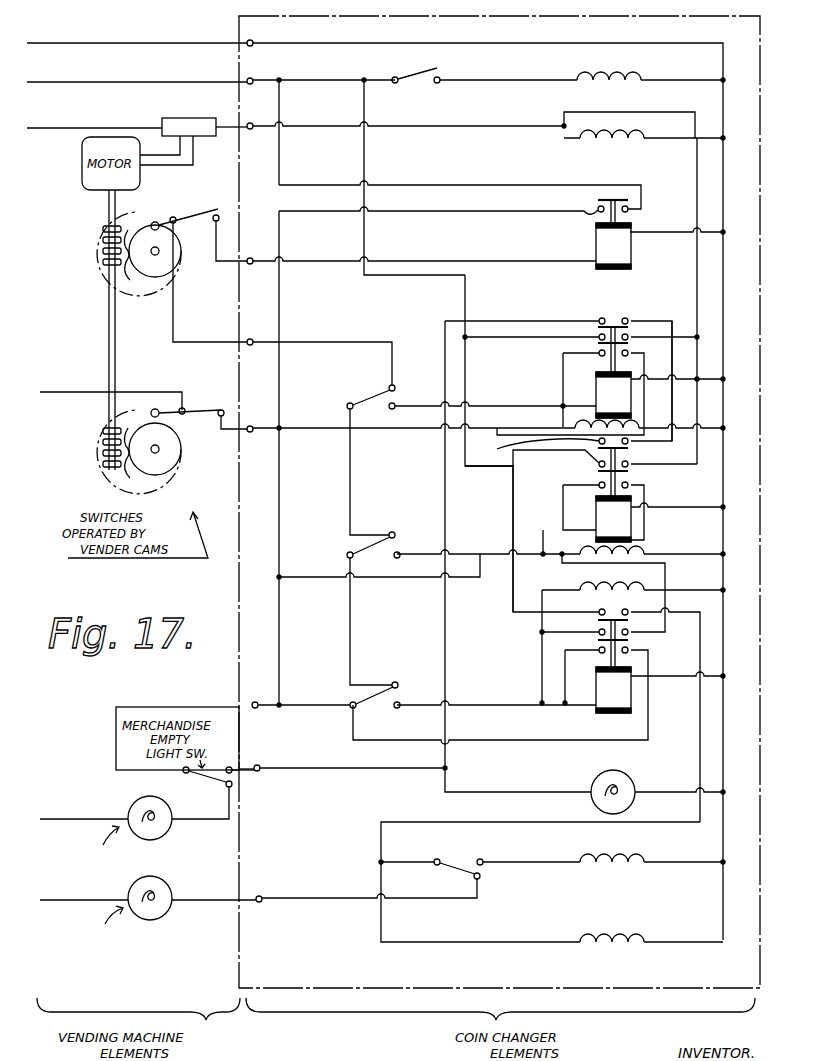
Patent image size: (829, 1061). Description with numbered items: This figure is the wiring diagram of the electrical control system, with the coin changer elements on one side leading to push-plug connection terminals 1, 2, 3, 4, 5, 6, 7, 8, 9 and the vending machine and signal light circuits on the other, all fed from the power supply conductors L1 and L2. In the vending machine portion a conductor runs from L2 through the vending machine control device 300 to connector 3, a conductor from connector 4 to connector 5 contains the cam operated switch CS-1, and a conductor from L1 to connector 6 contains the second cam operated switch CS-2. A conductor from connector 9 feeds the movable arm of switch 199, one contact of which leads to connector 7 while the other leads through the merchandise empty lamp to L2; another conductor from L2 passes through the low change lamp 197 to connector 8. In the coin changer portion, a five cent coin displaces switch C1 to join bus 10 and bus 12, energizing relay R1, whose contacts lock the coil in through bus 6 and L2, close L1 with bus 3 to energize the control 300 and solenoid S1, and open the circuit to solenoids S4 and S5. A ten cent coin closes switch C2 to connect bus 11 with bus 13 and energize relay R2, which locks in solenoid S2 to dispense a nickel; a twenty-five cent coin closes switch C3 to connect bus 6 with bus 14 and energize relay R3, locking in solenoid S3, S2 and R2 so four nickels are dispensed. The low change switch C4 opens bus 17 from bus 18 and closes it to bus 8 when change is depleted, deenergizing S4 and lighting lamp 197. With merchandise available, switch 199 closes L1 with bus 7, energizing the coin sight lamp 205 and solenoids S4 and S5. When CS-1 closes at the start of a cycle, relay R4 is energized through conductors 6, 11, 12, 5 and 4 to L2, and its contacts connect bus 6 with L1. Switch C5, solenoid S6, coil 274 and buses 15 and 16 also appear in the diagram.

The push-plug connection terminal 1 is at (256, 35).
The push-plug connection terminal 2 is at (256, 73).
The connector / bus 3 is at (697, 192).
The connector 4 is at (334, 262).
The connector / conductor 5 is at (332, 344).
The connector / bus 6 is at (296, 645).
The connector / bus 7 is at (508, 782).
The connector / bus 8 is at (369, 898).
The connector 9 is at (502, 74).
The bus 10 is at (528, 406).
The bus 11 is at (350, 645).
The bus 12 is at (350, 480).
The bus 13 is at (554, 526).
The bus 14 is at (540, 616).
The bus 15 is at (657, 321).
The bus 16 is at (512, 512).
The bus 17 is at (424, 822).
The bus 18 is at (505, 858).
The merchandise empty switch 199 is at (158, 827).
The low change signalling lamp 197 is at (178, 886).
The coin sight lamp 205 is at (630, 783).
The coil 274 is at (572, 428).
The vending machine control device 300 is at (154, 129).
The power supply conductor L1 is at (374, 160).
The power supply conductor L2 is at (723, 93).
The five cent coin switch C1 is at (385, 394).
The ten cent coin switch C2 is at (387, 545).
The twenty-five cent coin switch C3 is at (390, 695).
The low change switch C4 is at (432, 858).
The switch C5 is at (416, 67).
The vending machine cam operated switch CS-1 is at (158, 243).
The vending machine cam operated switch CS-2 is at (161, 441).
The relay R1 is at (572, 312).
The relay R2 is at (578, 462).
The relay R3 is at (650, 641).
The relay R4 is at (502, 225).
The coin viewing control solenoid S1 is at (626, 136).
The solenoid S2 is at (636, 558).
The solenoid S3 is at (582, 590).
The coin rejection control solenoid S4 is at (652, 851).
The coin rejection control solenoid S5 is at (651, 927).
The solenoid S6 is at (651, 67).